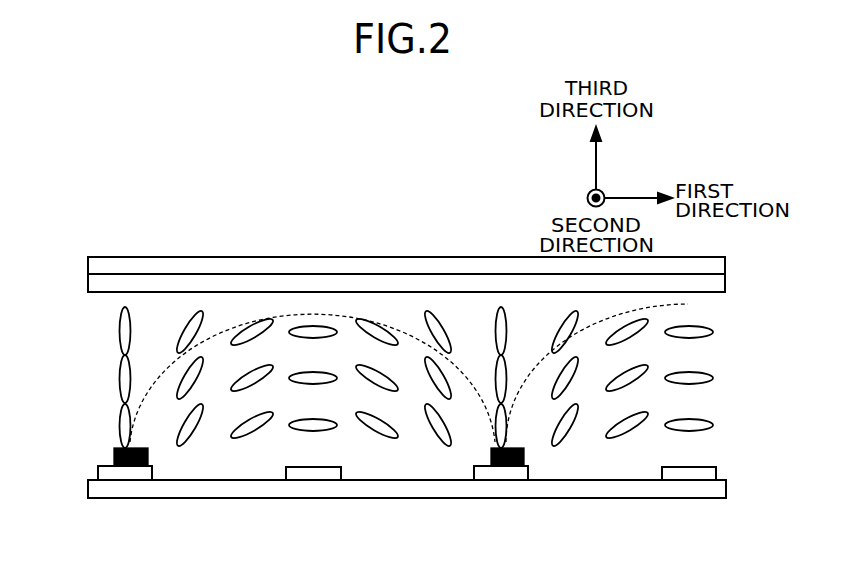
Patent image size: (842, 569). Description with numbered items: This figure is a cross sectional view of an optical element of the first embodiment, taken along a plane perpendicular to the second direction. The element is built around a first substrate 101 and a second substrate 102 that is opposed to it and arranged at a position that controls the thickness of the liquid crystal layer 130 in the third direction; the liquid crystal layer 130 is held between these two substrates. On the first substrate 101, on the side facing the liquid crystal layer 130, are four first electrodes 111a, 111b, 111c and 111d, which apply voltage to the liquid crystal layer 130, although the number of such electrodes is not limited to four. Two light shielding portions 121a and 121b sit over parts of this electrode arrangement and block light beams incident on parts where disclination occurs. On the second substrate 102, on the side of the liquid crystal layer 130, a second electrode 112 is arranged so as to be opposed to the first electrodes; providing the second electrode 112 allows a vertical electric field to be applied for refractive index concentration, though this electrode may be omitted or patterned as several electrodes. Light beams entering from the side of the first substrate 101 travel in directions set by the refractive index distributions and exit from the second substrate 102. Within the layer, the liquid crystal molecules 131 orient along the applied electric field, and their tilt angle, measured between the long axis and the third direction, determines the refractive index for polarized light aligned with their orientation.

The first substrate 101 is at (88, 487).
The second substrate 102 is at (88, 259).
The second electrode 112 is at (88, 281).
The first electrode 111a is at (98, 473).
The first electrode 111b is at (284, 470).
The first electrode 111c is at (471, 470).
The first electrode 111d is at (659, 472).
The light shielding portion 121a is at (114, 458).
The light shielding portion 121b is at (524, 455).
The liquid crystal layer 130 is at (456, 384).
The liquid crystal molecule 131 is at (728, 336).